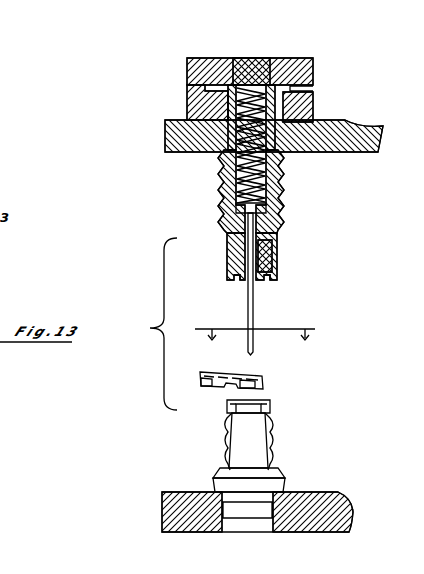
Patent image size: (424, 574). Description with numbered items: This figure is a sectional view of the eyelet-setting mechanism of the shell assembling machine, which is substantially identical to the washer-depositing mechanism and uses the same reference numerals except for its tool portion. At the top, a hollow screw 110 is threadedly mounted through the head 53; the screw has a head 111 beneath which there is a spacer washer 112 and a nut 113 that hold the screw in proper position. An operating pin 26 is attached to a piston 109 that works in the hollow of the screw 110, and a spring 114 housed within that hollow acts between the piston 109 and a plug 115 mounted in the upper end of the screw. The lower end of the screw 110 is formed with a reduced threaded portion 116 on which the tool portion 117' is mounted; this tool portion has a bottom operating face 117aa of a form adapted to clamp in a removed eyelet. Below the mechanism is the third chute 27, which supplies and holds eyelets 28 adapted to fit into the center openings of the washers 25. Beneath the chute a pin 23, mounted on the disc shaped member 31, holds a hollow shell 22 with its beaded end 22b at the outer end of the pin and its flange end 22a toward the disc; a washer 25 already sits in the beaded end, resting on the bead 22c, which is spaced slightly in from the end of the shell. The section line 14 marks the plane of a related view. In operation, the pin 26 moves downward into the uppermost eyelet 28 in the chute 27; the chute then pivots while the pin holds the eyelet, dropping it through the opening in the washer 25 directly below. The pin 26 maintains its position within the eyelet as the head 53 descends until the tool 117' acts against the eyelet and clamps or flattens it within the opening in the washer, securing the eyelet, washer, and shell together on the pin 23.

The head 53 is at (368, 139).
The head of the screw 111 is at (300, 79).
The spacer washer 112 is at (304, 89).
The nut 113 is at (300, 112).
The plug 115 is at (266, 64).
The spring 114 is at (230, 184).
The screw 110 is at (276, 192).
The piston 109 is at (268, 214).
The reduced threaded portion 116 is at (279, 243).
The tool portion 117' is at (294, 256).
The bottom operating face 117aa is at (272, 281).
The operating pin 26 is at (249, 300).
The section line 14 is at (255, 322).
The third chute 27 is at (238, 375).
The washer 25 is at (250, 402).
The eyelet 28 is at (212, 388).
The hollow shell 22 is at (277, 424).
The beaded end 22b is at (270, 404).
The bead 22c is at (233, 409).
The flange end 22a is at (224, 464).
The pin 23 is at (281, 483).
The disc shaped member 31 is at (343, 509).